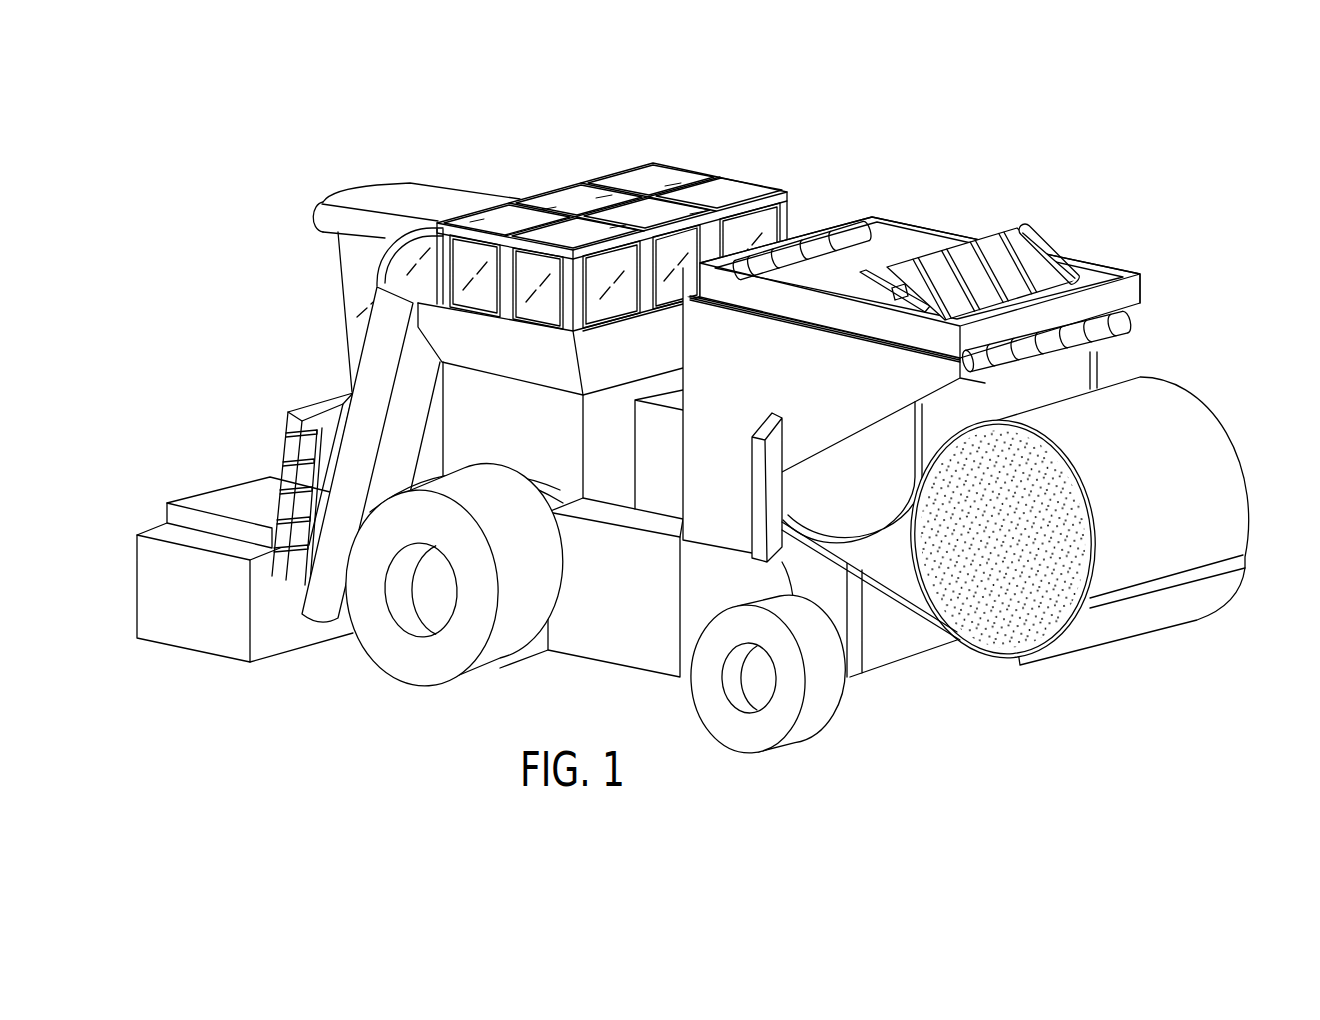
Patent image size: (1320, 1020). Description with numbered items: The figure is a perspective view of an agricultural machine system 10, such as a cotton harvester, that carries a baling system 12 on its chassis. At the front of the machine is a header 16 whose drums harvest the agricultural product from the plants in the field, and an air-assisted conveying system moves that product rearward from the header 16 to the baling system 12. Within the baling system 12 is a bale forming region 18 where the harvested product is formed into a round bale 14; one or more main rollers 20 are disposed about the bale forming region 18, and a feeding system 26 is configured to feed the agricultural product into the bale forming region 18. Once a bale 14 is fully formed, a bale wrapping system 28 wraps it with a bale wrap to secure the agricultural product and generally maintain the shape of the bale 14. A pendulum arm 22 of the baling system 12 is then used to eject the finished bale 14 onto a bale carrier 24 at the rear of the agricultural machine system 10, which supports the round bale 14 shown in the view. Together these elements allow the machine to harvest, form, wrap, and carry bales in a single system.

The agricultural machine system 10 is at (588, 127).
The baling system 12 is at (911, 340).
The bale 14 is at (1085, 545).
The header 16 is at (177, 495).
The bale forming region 18 is at (983, 225).
The main rollers 20 is at (865, 236).
The pendulum arm 22 is at (1047, 254).
The bale carrier 24 is at (997, 662).
The feeding system 26 is at (668, 492).
The bale wrapping system 28 is at (640, 445).